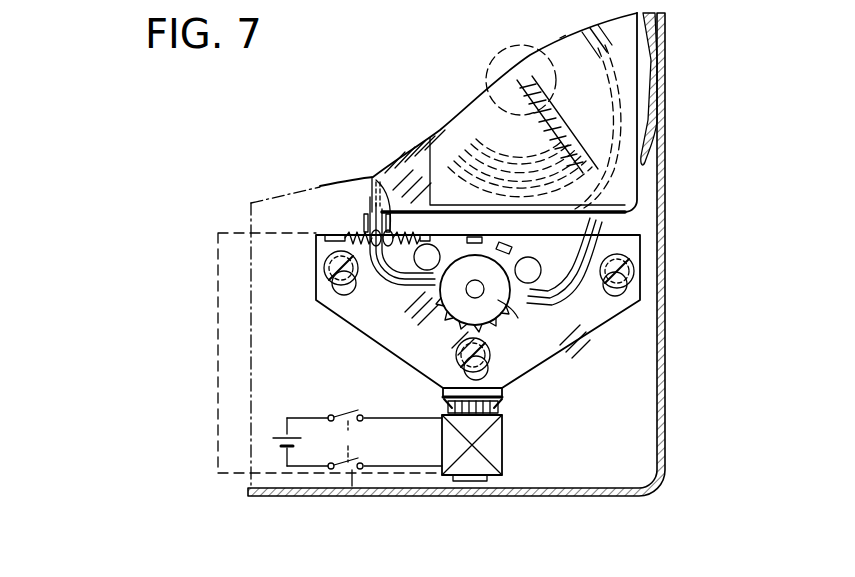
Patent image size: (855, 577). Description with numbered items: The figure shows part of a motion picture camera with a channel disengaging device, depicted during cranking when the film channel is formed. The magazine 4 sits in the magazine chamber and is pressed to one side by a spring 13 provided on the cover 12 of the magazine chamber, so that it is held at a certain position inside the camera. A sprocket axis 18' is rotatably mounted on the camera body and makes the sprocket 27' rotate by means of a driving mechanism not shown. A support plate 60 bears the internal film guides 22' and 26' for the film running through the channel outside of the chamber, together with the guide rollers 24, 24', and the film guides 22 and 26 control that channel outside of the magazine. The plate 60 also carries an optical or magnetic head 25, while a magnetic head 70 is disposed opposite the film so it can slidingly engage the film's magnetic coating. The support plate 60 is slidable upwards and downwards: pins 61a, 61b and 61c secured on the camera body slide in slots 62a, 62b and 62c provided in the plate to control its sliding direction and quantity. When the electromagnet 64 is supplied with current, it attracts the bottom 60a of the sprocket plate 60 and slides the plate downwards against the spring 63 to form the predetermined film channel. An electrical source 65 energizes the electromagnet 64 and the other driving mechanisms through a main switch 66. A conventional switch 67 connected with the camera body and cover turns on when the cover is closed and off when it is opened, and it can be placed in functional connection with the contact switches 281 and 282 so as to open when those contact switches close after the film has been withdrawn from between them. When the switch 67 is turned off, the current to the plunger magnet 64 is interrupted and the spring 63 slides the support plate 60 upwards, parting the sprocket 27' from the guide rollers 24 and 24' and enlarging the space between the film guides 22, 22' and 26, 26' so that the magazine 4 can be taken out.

The magazine 4 is at (574, 62).
The cover 12 is at (667, 194).
The spring 13 is at (655, 134).
The sprocket axis 18' is at (476, 305).
The film guide 22 is at (394, 254).
The internal film guide 22' is at (407, 272).
The guide roller 24 is at (444, 226).
The guide roller 24' is at (543, 261).
The optical or magnetic head 25 is at (482, 238).
The film guide 26 is at (566, 294).
The internal film guide 26' is at (561, 274).
The sprocket 27' is at (522, 319).
The magnetic head 70 is at (512, 244).
The contact switch 281 is at (369, 236).
The contact switch 282 is at (382, 178).
The support plate 60 is at (420, 345).
The bottom of the sprocket plate 60a is at (443, 395).
The pin 61a is at (328, 266).
The pin 61b is at (490, 367).
The pin 61c is at (628, 273).
The slot 62a is at (332, 297).
The slot 62b is at (508, 390).
The slot 62c is at (641, 291).
The spring 63 is at (505, 426).
The electromagnet 64 is at (503, 460).
The electrical source 65 is at (276, 438).
The main switch 66 is at (364, 439).
The switch 67 is at (352, 486).